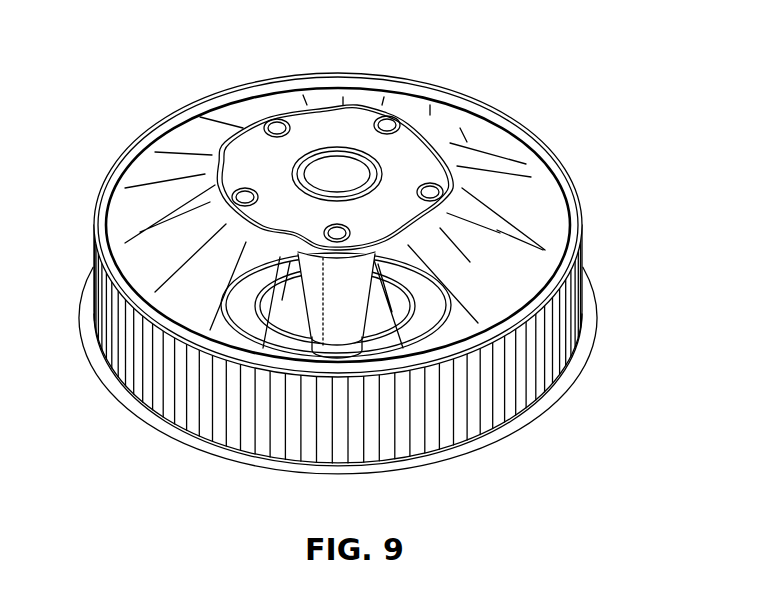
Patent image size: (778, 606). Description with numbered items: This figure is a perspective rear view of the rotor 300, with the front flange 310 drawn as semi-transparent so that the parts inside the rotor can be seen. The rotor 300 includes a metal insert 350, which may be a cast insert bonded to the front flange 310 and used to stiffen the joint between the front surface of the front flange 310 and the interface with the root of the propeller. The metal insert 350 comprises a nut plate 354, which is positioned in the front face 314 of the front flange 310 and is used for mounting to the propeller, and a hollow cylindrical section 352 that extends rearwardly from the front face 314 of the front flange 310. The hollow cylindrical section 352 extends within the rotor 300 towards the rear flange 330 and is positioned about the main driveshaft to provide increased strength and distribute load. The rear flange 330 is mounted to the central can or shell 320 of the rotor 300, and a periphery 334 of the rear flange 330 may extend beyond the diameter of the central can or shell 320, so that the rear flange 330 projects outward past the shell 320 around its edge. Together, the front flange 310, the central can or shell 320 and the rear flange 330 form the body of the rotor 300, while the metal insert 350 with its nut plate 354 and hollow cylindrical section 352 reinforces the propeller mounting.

The rotor 300 is at (351, 253).
The front flange 310 is at (532, 175).
The front face 314 is at (263, 187).
The central can or shell 320 is at (563, 302).
The rear flange 330 is at (462, 325).
The periphery 334 is at (562, 378).
The metal insert 350 is at (279, 253).
The hollow cylindrical section 352 is at (298, 280).
The nut plate 354 is at (250, 152).